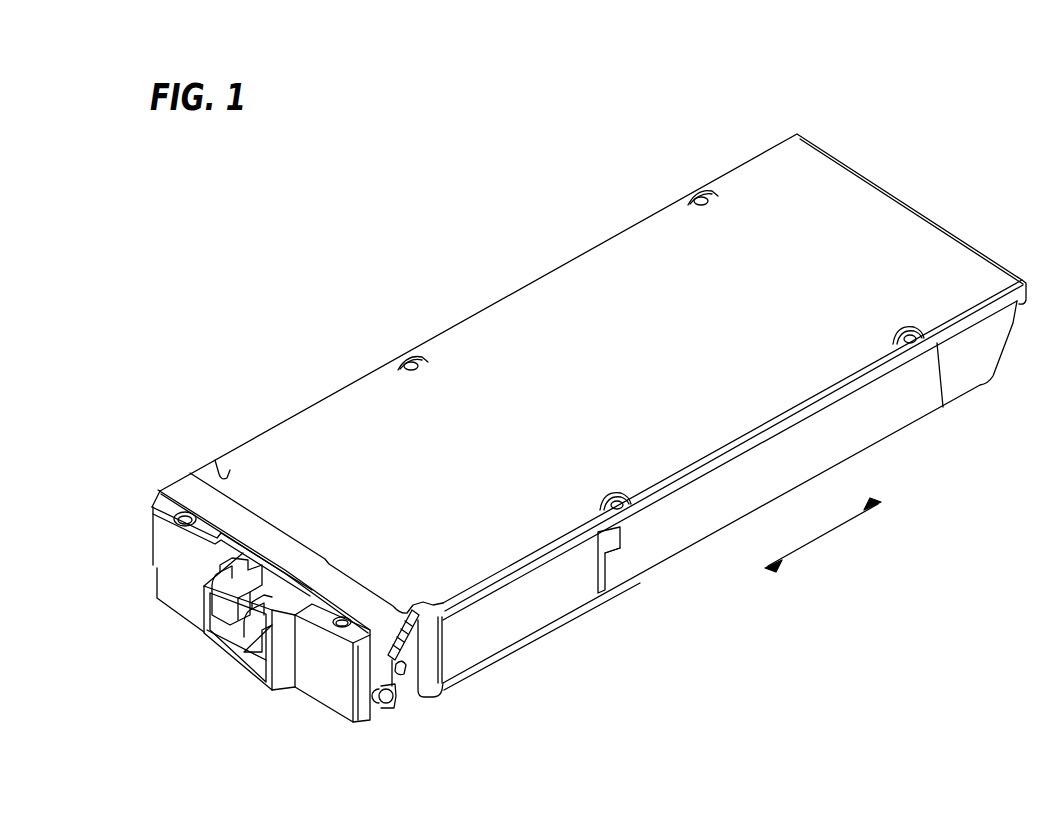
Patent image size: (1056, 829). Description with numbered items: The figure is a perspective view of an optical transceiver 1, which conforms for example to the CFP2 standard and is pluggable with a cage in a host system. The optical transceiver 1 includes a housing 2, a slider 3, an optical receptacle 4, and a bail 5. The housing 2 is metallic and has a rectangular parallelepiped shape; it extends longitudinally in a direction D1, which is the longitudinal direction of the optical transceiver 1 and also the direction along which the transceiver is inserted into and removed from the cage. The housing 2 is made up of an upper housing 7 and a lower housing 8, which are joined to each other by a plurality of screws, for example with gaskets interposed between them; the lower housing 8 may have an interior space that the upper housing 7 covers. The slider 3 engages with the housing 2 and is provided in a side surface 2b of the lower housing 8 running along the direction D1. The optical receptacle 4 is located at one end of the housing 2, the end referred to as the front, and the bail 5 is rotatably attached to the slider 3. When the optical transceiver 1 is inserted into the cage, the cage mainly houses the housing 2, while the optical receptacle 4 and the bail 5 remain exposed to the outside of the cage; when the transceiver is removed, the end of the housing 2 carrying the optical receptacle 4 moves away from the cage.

The optical transceiver 1 is at (622, 174).
The housing 2 is at (447, 213).
The side surface 2b is at (683, 537).
The slider 3 is at (547, 600).
The optical receptacle 4 is at (223, 636).
The bail 5 is at (337, 592).
The upper housing 7 is at (473, 333).
The lower housing 8 is at (583, 595).
The direction D1 is at (823, 535).